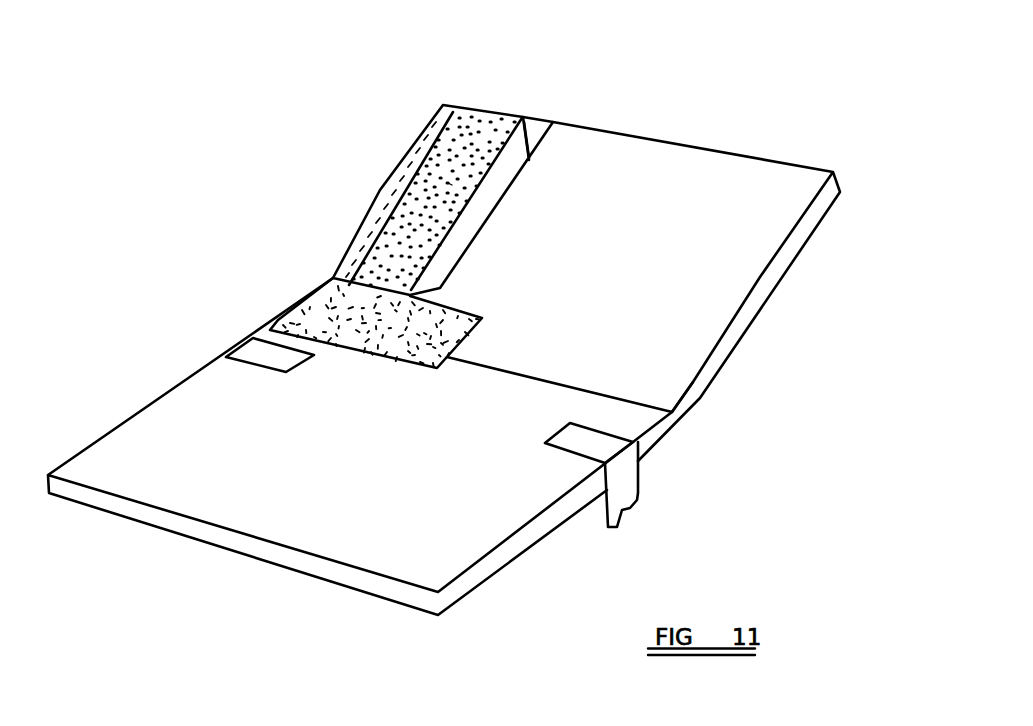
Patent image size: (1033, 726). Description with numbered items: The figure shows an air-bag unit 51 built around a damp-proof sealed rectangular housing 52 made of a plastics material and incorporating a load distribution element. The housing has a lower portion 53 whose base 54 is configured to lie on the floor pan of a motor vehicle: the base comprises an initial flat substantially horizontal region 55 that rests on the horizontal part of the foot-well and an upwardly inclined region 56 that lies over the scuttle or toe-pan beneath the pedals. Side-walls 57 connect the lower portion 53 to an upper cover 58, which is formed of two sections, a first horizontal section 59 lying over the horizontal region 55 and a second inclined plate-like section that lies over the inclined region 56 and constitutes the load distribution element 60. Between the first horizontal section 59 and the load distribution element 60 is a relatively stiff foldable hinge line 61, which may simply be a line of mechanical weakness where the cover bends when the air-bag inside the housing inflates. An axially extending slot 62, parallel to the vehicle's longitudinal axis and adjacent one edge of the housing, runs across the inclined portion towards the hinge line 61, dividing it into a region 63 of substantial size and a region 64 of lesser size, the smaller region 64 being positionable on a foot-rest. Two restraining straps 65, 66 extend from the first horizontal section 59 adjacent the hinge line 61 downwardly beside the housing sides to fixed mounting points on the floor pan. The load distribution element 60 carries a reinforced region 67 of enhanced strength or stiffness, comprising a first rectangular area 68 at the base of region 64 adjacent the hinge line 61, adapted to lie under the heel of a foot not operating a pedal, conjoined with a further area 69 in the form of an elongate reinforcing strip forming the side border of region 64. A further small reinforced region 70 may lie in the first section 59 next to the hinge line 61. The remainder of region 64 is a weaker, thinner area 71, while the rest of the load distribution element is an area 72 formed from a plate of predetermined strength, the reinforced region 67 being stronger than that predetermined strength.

The air-bag unit 51 is at (303, 212).
The housing 52 is at (728, 184).
The lower portion 53 is at (480, 593).
The base 54 is at (510, 563).
The flat substantially horizontal region 55 is at (567, 520).
The upwardly inclined region 56 is at (728, 356).
The side-walls 57 is at (528, 538).
The upper cover 58 is at (340, 475).
The first horizontal section 59 is at (190, 468).
The load distribution element 60 is at (687, 273).
The hinge line 61 is at (370, 313).
The slot 62 is at (508, 172).
The region of substantial size 63 is at (633, 183).
The region of lesser size 64 is at (486, 154).
The restraining strap 65 is at (630, 483).
The restraining strap 66 is at (262, 355).
The reinforced region 67 is at (338, 314).
The first rectangular area 68 is at (283, 327).
The further area 69 is at (382, 187).
The small reinforced region 70 is at (377, 355).
The weaker area 71 is at (448, 183).
The area of predetermined strength 72 is at (738, 215).